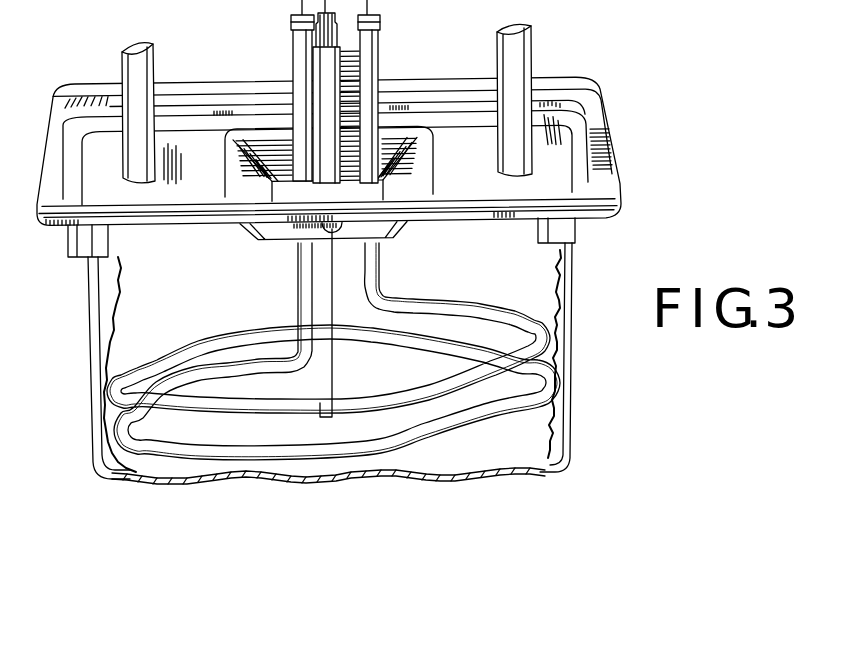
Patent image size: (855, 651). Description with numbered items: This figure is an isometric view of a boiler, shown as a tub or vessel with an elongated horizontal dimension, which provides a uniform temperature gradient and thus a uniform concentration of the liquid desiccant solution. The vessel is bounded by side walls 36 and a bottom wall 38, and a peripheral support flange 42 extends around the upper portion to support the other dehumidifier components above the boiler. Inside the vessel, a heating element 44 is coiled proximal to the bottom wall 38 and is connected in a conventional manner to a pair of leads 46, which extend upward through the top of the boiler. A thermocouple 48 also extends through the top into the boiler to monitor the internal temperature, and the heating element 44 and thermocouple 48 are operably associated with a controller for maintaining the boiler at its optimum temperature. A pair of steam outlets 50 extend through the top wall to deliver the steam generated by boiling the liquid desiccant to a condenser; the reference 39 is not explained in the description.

The side walls 36 is at (88, 363).
The bottom wall 38 is at (453, 473).
The heater assembly 39 is at (612, 229).
The peripheral support flange 42 is at (612, 152).
The heating element 44 is at (200, 340).
The leads 46 is at (293, 57).
The thermocouple 48 is at (333, 287).
The steam outlets 50 is at (128, 63).